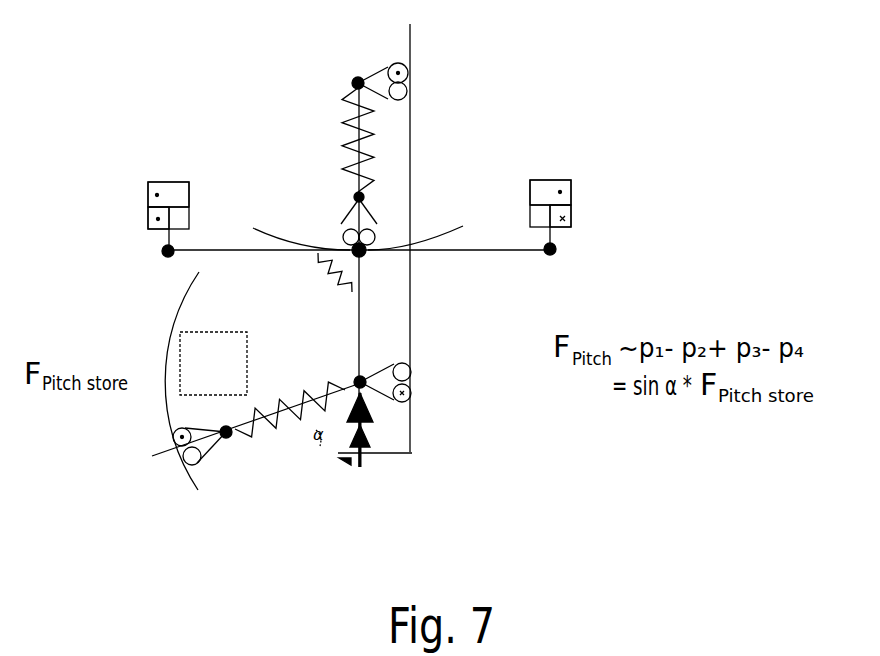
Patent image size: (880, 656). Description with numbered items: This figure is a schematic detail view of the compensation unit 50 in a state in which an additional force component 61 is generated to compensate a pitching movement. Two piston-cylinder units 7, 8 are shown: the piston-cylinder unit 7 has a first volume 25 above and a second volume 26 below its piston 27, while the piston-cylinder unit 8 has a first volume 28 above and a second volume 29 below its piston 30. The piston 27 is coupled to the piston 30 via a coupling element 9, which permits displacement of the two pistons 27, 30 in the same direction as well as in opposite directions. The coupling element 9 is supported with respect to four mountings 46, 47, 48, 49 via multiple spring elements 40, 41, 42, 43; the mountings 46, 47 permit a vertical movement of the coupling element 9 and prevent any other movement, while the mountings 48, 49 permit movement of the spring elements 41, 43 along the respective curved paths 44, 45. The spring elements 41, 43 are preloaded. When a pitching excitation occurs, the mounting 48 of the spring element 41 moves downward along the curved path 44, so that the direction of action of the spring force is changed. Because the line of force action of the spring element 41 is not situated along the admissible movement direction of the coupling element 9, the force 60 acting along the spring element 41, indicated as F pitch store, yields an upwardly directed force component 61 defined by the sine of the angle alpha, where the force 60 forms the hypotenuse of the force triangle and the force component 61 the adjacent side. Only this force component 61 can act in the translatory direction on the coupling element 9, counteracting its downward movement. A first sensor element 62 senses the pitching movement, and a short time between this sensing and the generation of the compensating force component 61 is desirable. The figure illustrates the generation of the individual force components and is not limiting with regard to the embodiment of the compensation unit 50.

The piston-cylinder unit 7 is at (188, 182).
The piston-cylinder unit 8 is at (533, 180).
The coupling element 9 is at (465, 248).
The first volume 25 is at (148, 192).
The second volume 26 is at (148, 218).
The piston 27 is at (162, 254).
The first volume 28 is at (571, 186).
The second volume 29 is at (575, 218).
The piston 30 is at (553, 232).
The spring element 40 is at (412, 455).
The spring element 41 is at (265, 415).
The spring element 42 is at (318, 258).
The spring element 43 is at (347, 100).
The curved path 44 is at (192, 478).
The curved path 45 is at (432, 240).
The mounting 46 is at (410, 68).
The mounting 47 is at (412, 392).
The mounting 48 is at (172, 438).
The mounting 49 is at (343, 218).
The compensation unit 50 is at (530, 83).
The force 60 is at (306, 398).
The force component 61 is at (364, 466).
The first sensor element 62 is at (213, 363).